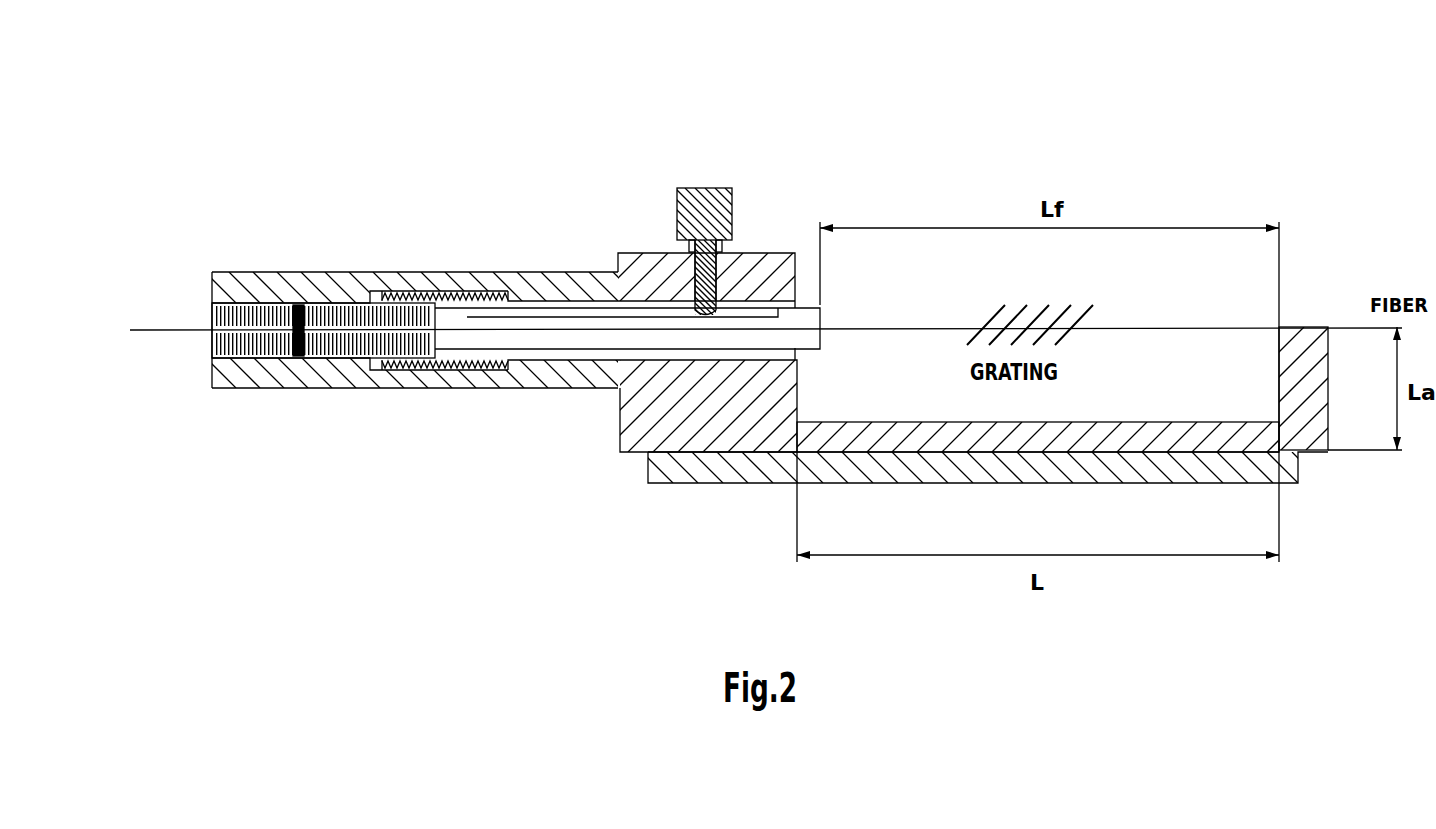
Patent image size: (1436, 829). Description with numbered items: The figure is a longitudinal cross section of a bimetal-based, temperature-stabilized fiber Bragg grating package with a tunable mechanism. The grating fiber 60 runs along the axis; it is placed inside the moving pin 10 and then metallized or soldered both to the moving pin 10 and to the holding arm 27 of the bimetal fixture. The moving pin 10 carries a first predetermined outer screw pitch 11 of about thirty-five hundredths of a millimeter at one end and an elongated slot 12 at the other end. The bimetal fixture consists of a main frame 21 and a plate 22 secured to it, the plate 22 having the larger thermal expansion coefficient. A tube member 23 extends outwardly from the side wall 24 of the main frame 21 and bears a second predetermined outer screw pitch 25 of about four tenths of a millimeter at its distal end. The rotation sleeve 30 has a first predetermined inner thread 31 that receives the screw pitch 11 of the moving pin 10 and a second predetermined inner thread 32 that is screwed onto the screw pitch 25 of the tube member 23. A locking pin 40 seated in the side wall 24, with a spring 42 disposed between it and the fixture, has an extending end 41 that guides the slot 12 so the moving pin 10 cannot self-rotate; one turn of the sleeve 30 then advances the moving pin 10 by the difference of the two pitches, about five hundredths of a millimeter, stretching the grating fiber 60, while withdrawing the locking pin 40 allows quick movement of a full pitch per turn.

The moving pin 10 is at (562, 345).
The first predetermined outer screw pitch 11 is at (263, 303).
The elongated slot 12 is at (668, 315).
The main frame 21 is at (925, 432).
The plate 22 is at (1118, 465).
The tube member 23 is at (555, 297).
The side wall 24 is at (632, 432).
The second predetermined outer screw pitch 25 is at (437, 370).
The holding arm 27 is at (1295, 340).
The rotation sleeve 30 is at (330, 303).
The first predetermined inner thread 31 is at (290, 350).
The second predetermined inner thread 32 is at (435, 303).
The locking pin 40 is at (705, 205).
The extending end 41 is at (725, 288).
The spring 42 is at (723, 247).
The grating fiber 60 is at (1343, 328).